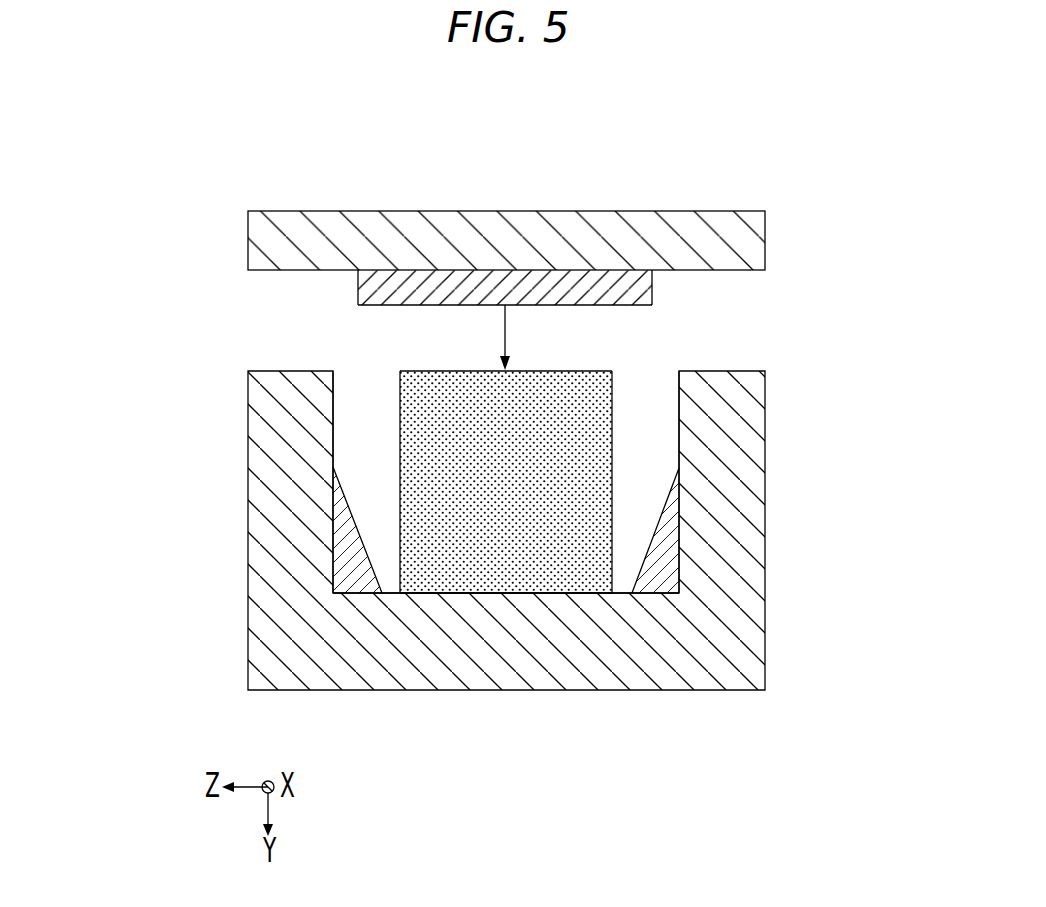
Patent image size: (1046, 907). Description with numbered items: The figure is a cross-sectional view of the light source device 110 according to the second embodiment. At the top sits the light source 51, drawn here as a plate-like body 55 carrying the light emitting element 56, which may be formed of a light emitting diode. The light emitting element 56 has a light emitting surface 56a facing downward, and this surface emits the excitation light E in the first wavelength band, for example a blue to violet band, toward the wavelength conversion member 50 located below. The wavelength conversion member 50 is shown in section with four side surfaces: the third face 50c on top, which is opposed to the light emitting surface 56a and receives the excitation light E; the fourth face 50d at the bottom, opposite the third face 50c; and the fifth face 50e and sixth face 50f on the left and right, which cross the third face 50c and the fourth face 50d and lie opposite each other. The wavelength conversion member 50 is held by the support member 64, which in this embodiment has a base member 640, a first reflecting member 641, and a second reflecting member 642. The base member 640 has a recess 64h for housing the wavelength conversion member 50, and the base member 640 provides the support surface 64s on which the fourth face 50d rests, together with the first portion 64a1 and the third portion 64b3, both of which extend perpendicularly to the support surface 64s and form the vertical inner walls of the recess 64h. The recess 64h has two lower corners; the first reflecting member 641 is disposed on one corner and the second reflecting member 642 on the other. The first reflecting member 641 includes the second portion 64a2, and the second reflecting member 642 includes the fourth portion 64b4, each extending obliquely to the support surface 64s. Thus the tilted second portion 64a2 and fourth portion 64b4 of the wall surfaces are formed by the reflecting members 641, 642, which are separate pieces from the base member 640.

The light source device 110 is at (254, 179).
The light source 51 is at (736, 194).
The pressing plate 55 is at (683, 228).
The light emitting element 56 is at (438, 278).
The light emitting surface 56a is at (538, 303).
The excitation light E is at (509, 349).
The wavelength conversion member 50 is at (597, 430).
The third face 50c is at (598, 371).
The fourth face 50d is at (468, 593).
The fifth face 50e is at (400, 450).
The sixth face 50f is at (612, 485).
The support member 64 is at (772, 648).
The base member 640 is at (755, 612).
The recess 64h is at (657, 374).
The first portion 64a1 is at (333, 418).
The second portion 64a2 is at (366, 560).
The first reflecting member 641 is at (343, 542).
The third portion 64b3 is at (679, 372).
The fourth portion 64b4 is at (668, 530).
The second reflecting member 642 is at (658, 542).
The support surface 64s is at (552, 592).